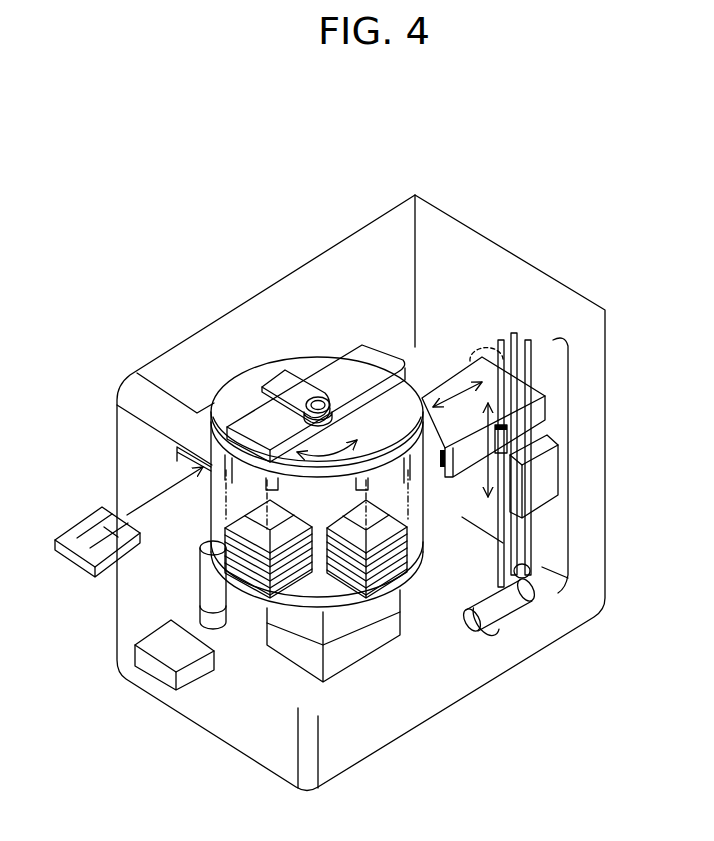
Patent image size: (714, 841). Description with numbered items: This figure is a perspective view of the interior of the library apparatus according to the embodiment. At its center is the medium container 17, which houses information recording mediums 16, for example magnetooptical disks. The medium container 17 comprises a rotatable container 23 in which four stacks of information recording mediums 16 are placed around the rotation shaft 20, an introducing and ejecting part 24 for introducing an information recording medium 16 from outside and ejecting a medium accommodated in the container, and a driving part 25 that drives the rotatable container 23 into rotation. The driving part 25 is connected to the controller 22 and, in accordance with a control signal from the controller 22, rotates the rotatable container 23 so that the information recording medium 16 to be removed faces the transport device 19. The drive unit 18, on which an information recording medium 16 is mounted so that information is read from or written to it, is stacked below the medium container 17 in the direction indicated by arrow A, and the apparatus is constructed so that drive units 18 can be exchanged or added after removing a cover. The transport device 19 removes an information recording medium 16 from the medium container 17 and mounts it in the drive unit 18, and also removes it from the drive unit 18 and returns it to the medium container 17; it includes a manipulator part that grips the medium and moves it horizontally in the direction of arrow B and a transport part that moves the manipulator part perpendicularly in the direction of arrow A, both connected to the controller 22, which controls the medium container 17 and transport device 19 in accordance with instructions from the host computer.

The information recording medium 16 is at (83, 550).
The medium container 17 is at (249, 354).
The drive unit 18 is at (350, 660).
The transport device 19 is at (568, 457).
The rotation shaft 20 is at (317, 398).
The controller 22 is at (158, 672).
The rotatable container 23 is at (220, 393).
The introducing and ejecting part 24 is at (363, 366).
The driving part 25 is at (207, 590).